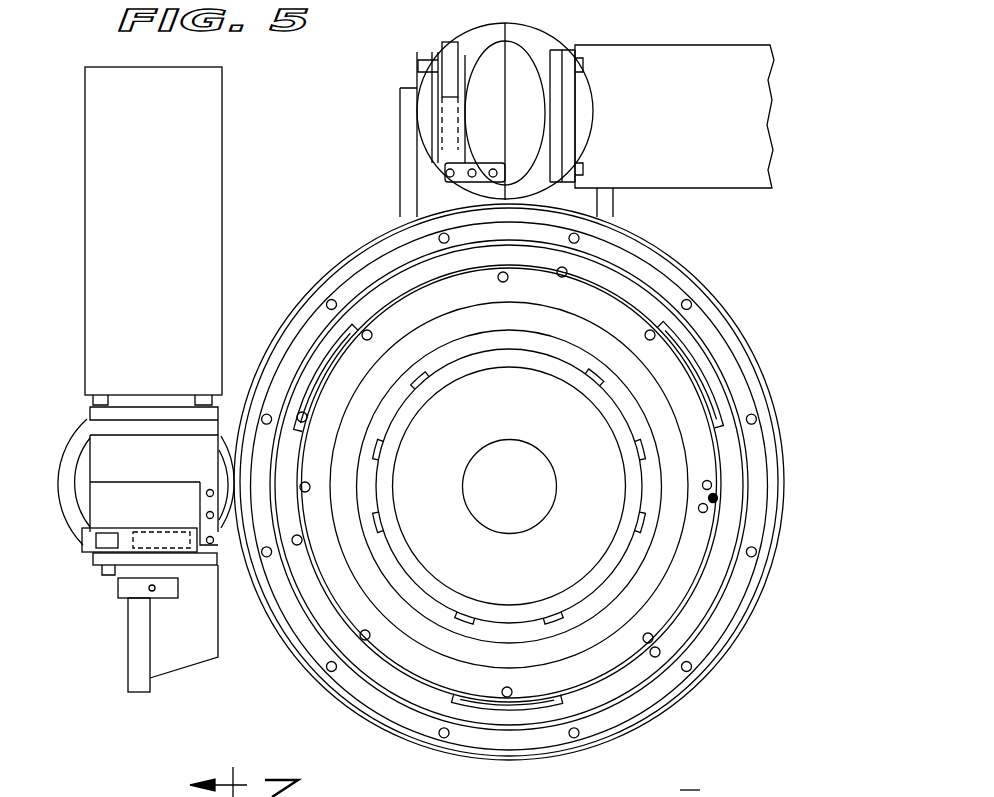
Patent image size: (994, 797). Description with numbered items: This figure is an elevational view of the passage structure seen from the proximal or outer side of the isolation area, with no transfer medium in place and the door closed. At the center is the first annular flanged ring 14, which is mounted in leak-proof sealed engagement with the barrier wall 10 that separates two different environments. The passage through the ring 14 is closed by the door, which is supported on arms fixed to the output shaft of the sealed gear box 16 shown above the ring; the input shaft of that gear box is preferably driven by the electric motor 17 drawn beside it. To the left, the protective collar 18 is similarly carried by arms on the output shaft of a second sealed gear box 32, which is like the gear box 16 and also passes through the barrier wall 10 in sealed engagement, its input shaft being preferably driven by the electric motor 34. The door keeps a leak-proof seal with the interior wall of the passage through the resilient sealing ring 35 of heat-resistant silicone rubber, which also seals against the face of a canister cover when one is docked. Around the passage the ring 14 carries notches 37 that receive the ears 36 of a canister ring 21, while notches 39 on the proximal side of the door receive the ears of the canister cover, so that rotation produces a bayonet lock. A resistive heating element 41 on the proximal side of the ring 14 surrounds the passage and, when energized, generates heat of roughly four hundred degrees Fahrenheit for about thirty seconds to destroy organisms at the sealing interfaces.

The barrier wall 10 is at (795, 692).
The first annular flanged ring 14 is at (758, 608).
The sealed gear box 16 is at (553, 33).
The electric motor 17 is at (743, 188).
The protective collar 18 is at (188, 668).
The canister ring 21 is at (691, 791).
The sealed gear box 32 is at (62, 512).
The electric motor 34 is at (222, 175).
The sealing ring 35 is at (678, 462).
The ears 36 is at (593, 796).
The notches 37 is at (520, 716).
The notches 39 is at (490, 620).
The resistive heating element 41 is at (670, 368).